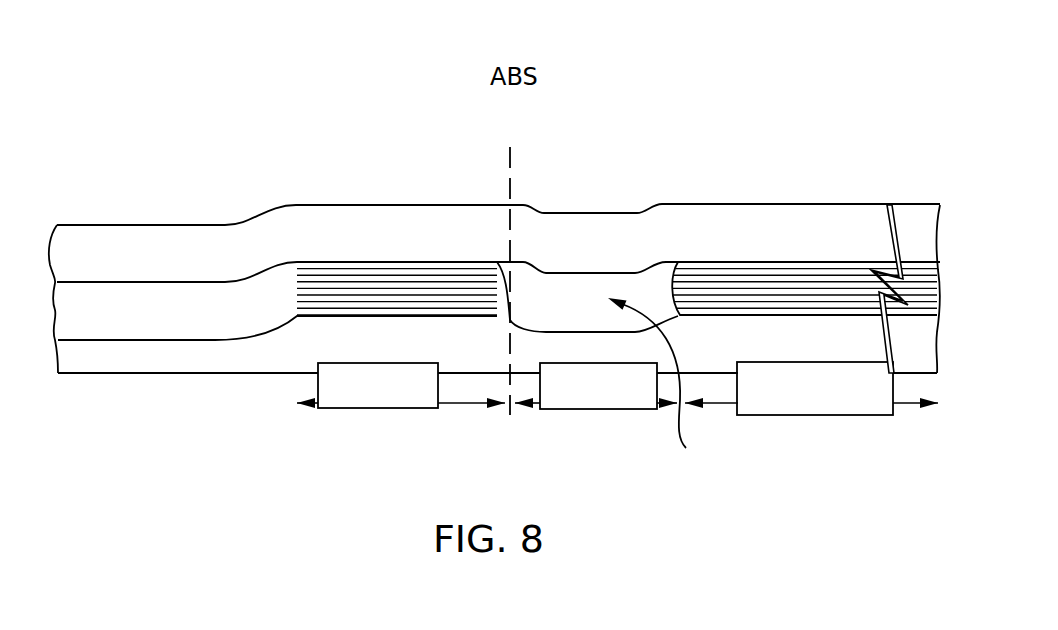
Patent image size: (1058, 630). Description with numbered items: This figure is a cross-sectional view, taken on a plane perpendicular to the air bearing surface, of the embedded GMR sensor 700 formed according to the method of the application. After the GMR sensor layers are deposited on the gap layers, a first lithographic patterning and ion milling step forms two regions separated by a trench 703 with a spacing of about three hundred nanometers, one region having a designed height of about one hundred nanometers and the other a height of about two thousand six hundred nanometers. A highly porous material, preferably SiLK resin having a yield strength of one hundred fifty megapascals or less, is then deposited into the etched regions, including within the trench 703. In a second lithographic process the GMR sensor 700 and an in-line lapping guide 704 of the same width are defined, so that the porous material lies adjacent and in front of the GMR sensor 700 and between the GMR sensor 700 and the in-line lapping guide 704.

The embedded GMR sensor 700 is at (362, 242).
The trench 703 is at (583, 298).
The in-line lapping guide 704 is at (801, 300).